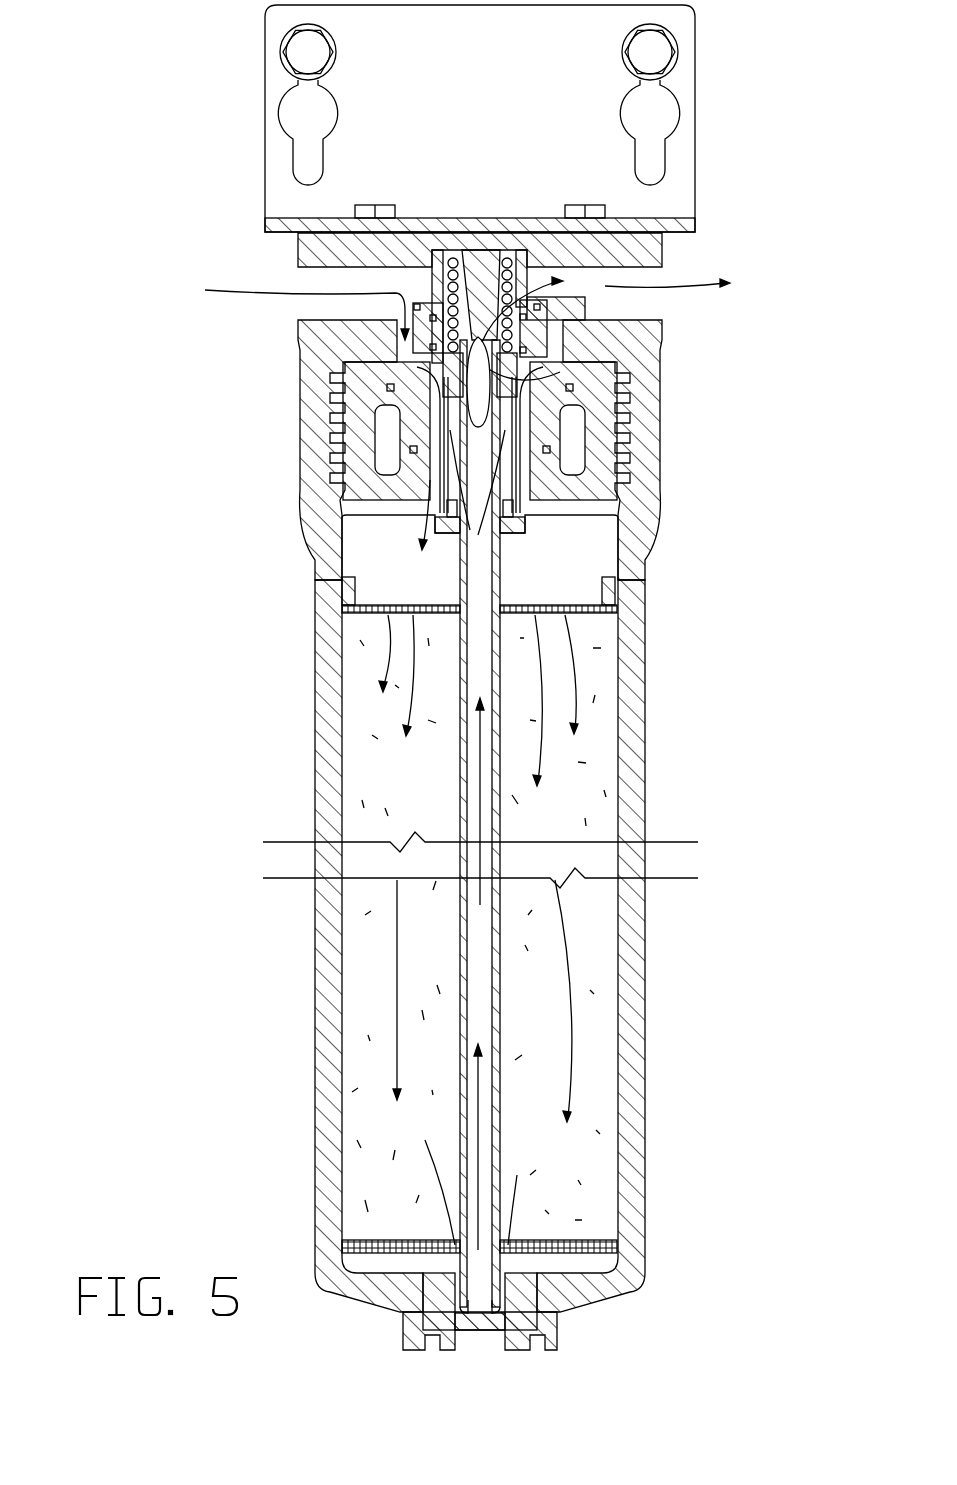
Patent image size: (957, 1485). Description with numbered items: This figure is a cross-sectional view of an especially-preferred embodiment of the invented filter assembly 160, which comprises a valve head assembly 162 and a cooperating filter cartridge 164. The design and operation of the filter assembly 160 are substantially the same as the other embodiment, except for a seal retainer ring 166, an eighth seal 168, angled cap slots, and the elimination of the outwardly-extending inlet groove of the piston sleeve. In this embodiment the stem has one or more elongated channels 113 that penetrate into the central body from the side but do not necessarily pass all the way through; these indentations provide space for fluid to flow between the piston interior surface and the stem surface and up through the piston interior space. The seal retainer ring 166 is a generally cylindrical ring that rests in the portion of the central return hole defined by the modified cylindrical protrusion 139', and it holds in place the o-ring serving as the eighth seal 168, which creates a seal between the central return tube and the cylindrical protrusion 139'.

The elongated channel 113 is at (548, 372).
The modified cylindrical protrusion 139' is at (572, 433).
The filter assembly 160 is at (183, 601).
The valve head assembly 162 is at (726, 376).
The filter cartridge 164 is at (732, 1046).
The seal retainer ring 166 is at (446, 512).
The eighth seal 168 is at (494, 525).